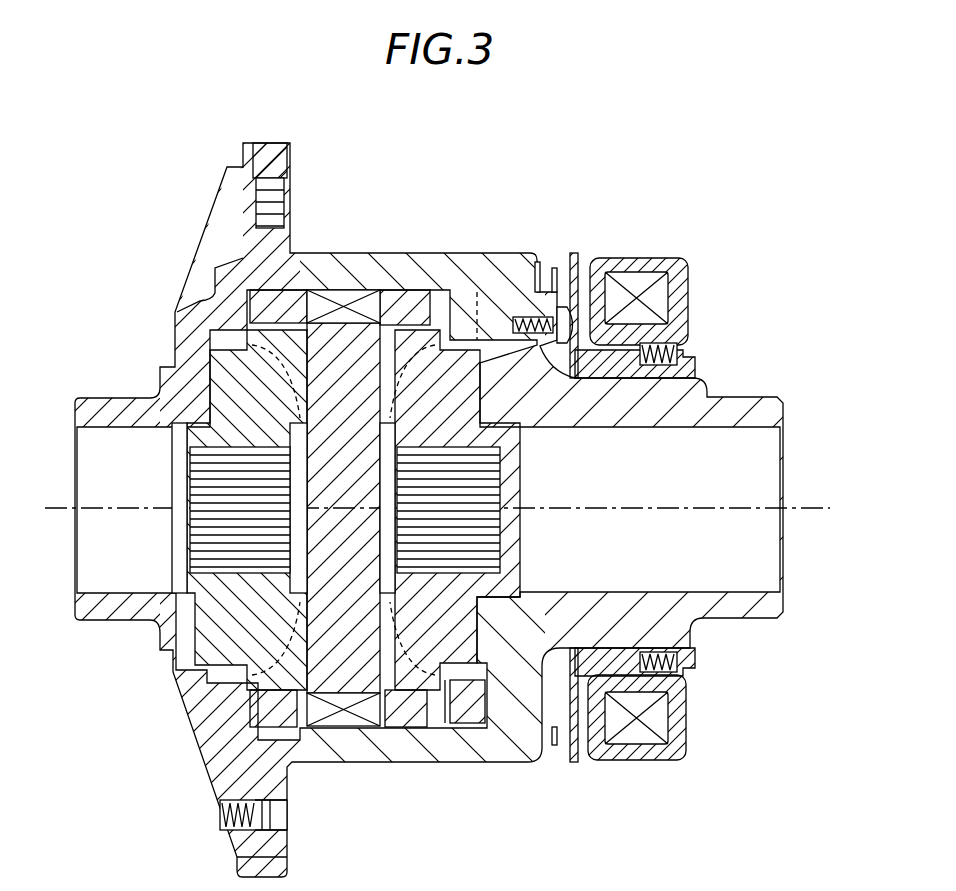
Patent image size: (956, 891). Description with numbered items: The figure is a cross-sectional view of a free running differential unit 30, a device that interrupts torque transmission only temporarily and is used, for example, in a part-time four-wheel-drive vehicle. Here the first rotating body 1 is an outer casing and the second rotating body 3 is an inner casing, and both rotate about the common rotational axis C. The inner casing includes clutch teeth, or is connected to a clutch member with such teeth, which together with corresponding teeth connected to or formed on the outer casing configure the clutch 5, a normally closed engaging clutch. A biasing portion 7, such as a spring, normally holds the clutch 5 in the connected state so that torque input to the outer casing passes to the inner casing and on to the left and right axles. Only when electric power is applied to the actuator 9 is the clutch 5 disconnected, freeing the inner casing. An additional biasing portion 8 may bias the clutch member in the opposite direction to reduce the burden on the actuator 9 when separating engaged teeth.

The first rotating body 1 is at (334, 262).
The second rotating body 3 is at (400, 298).
The clutch 5 is at (454, 783).
The biasing portion 7 is at (678, 664).
The additional biasing portion 8 is at (555, 748).
The actuator 9 is at (622, 782).
The free running differential unit 30 is at (640, 506).
The rotational axis C is at (814, 505).